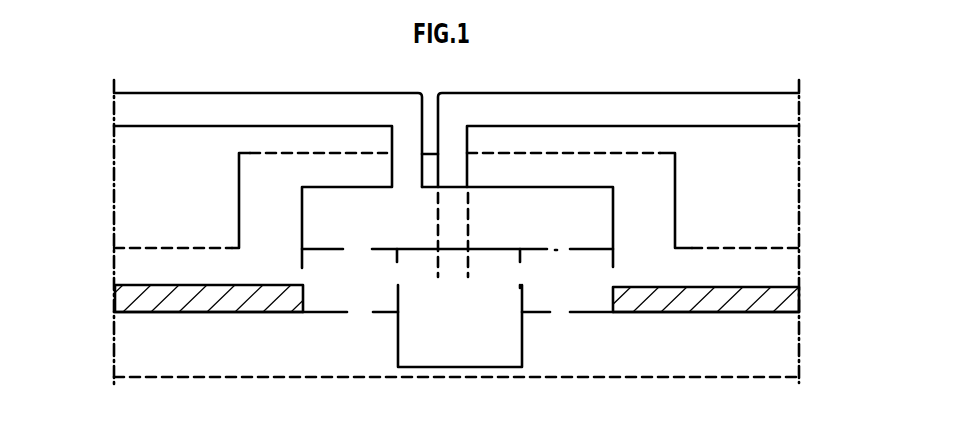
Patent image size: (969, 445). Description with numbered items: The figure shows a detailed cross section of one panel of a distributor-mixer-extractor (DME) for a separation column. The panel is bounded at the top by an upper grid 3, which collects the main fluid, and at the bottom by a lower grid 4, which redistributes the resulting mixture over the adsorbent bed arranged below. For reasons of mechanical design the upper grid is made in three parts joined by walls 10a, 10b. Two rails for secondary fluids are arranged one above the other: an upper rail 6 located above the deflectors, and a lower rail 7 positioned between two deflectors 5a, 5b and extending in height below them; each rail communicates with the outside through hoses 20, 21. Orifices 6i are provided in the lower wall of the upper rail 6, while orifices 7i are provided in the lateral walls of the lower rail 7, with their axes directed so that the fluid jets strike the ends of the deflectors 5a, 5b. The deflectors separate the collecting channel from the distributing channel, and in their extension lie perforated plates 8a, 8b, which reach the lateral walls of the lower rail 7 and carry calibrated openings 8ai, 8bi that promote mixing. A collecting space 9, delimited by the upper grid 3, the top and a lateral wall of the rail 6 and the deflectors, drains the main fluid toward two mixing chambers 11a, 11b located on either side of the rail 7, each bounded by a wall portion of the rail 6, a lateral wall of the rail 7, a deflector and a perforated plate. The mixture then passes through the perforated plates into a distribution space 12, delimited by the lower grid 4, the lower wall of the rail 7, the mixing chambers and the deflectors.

The hose 20 is at (277, 102).
The hose 21 is at (655, 103).
The upper grid 3 is at (663, 152).
The wall 10b is at (238, 170).
The wall 10a is at (677, 183).
The upper rail 6 is at (509, 238).
The orifices of upper rail 6i is at (555, 250).
The collecting space 9 is at (797, 275).
The mixing chamber 11b is at (370, 298).
The mixing chamber 11a is at (582, 299).
The lower rail 7 is at (466, 345).
The orifices of lower rail 7i is at (518, 275).
The deflector 5b is at (130, 300).
The deflector 5a is at (800, 303).
The openings of perforated plate 8bi is at (350, 315).
The perforated plate 8b is at (390, 315).
The perforated plate 8a is at (534, 317).
The openings of perforated plate 8ai is at (565, 312).
The distribution space 12 is at (785, 352).
The lower grid 4 is at (700, 377).